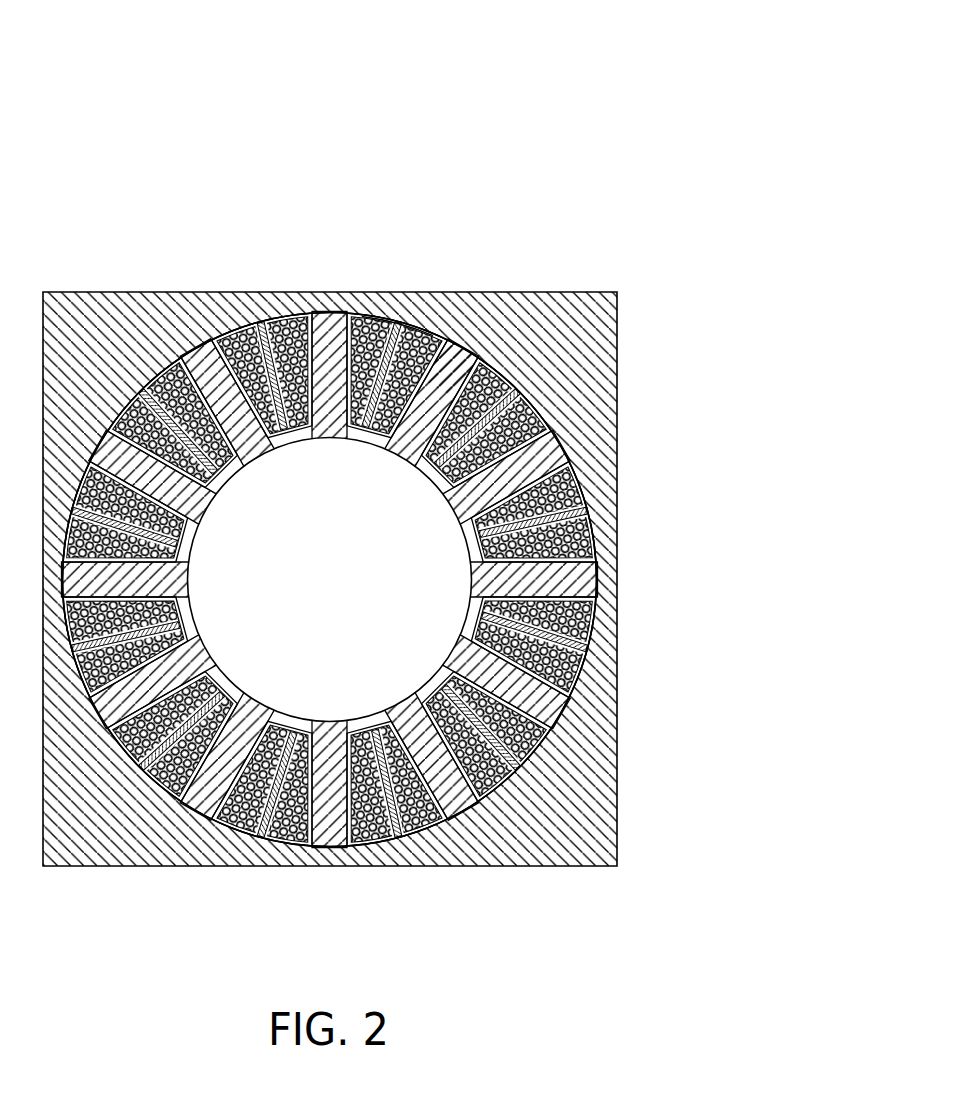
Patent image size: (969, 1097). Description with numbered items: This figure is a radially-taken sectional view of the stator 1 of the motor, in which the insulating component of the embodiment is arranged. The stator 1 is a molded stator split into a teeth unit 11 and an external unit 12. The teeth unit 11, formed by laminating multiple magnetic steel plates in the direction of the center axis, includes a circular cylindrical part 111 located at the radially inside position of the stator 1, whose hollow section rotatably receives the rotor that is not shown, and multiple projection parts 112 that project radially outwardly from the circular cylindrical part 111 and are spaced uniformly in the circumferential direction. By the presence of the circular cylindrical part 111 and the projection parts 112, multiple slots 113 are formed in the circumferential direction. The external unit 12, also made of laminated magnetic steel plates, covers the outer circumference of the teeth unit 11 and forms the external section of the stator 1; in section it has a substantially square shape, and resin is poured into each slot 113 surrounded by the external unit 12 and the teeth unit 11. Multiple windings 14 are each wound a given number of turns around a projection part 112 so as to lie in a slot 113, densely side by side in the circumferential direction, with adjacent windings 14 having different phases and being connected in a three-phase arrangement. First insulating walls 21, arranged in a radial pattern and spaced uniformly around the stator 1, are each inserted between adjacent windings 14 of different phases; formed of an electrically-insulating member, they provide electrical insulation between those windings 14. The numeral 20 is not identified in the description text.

The stator 1 is at (612, 97).
The teeth unit 11 is at (560, 205).
The circular cylindrical part 111 is at (413, 458).
The projection part 112 is at (447, 358).
The slot 113 is at (416, 305).
The external unit 12 is at (577, 368).
The winding 14 is at (358, 318).
The coil 20 is at (330, 580).
The first insulating wall 21 is at (262, 327).